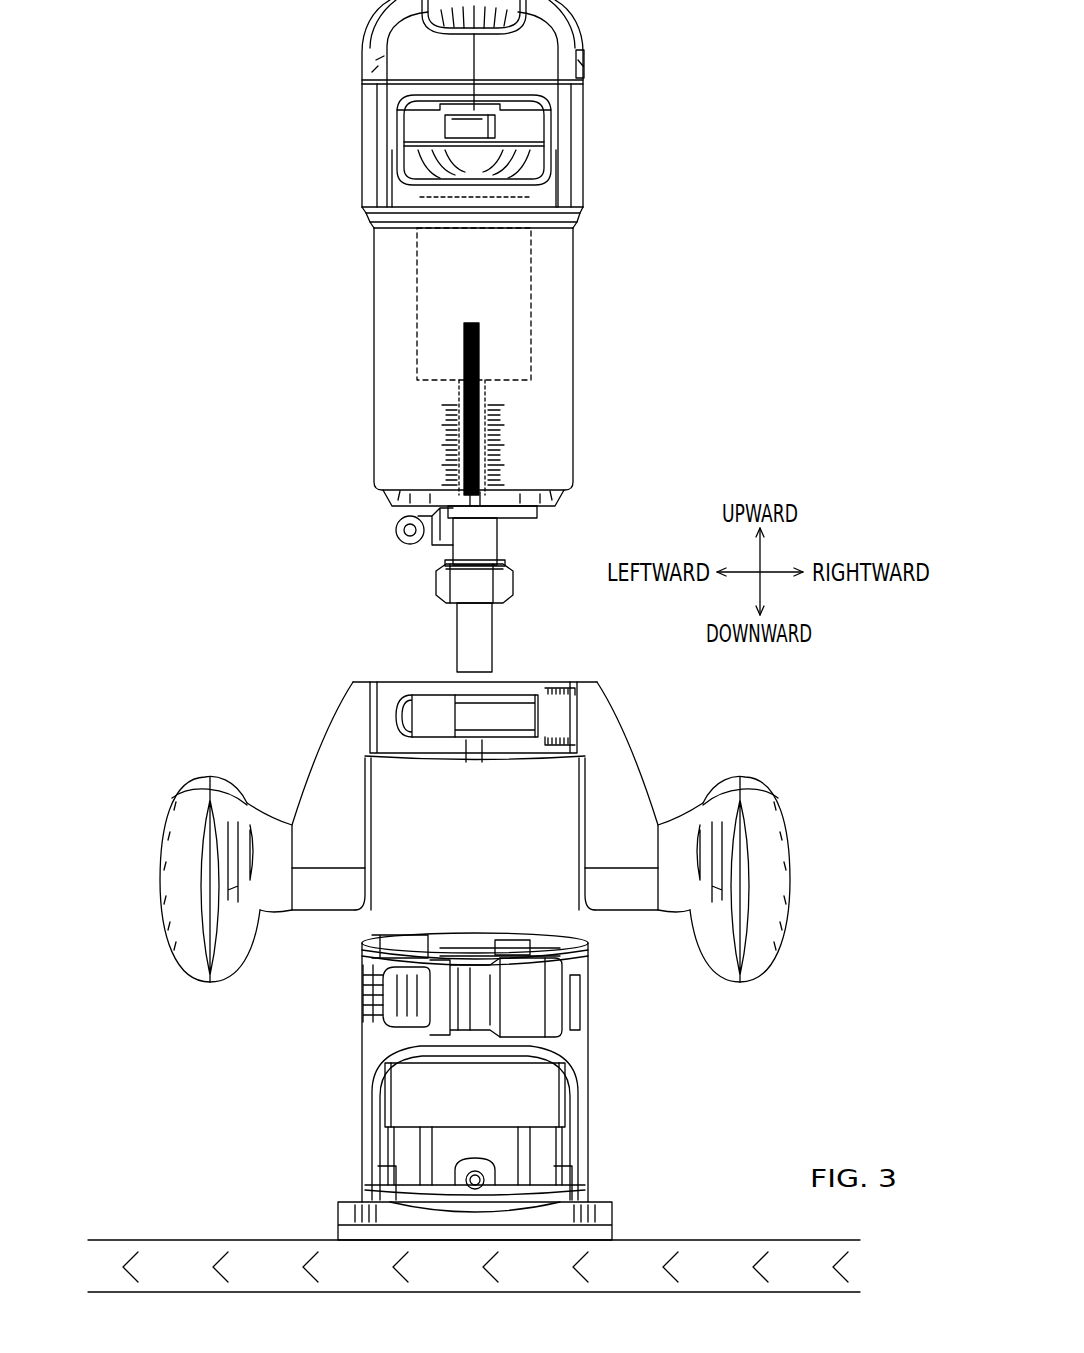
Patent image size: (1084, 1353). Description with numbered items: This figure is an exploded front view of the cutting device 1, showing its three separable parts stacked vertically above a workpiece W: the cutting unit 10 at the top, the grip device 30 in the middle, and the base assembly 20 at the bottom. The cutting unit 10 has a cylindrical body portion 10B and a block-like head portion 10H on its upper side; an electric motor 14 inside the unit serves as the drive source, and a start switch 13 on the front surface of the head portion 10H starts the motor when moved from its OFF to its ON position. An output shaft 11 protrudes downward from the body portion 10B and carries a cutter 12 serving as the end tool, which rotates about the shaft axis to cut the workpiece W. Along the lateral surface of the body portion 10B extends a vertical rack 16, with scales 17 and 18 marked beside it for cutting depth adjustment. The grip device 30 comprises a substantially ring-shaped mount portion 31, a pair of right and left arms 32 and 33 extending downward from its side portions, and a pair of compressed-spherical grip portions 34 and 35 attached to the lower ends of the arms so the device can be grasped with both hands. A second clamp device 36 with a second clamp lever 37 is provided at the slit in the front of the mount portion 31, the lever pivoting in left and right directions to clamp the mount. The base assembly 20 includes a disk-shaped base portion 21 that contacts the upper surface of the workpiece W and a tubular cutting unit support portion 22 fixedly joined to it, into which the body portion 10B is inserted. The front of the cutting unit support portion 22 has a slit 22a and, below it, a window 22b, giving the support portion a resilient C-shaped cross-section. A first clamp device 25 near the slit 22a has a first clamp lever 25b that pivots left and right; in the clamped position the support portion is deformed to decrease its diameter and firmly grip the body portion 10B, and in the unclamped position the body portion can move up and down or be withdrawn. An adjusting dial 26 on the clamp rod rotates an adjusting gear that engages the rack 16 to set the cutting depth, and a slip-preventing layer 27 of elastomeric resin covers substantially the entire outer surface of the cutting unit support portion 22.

The cutting device 1 is at (707, 328).
The cutting unit 10 is at (352, 264).
The head portion 10H is at (538, 50).
The body portion 10B is at (395, 320).
The start switch 13 is at (458, 128).
The electric motor 14 is at (512, 288).
The rack 16 is at (480, 346).
The scale 17 is at (440, 420).
The scale 18 is at (505, 440).
The output shaft 11 is at (488, 535).
The cutter 12 is at (482, 634).
The grip device 30 is at (662, 701).
The mount portion 31 is at (406, 688).
The arm 32 is at (334, 772).
The arm 33 is at (616, 772).
The grip portion 34 is at (165, 860).
The grip portion 35 is at (786, 860).
The second clamp device 36 is at (484, 780).
The second clamp lever 37 is at (468, 722).
The base assembly 20 is at (624, 1085).
The base portion 21 is at (340, 1232).
The cutting unit support portion 22 is at (362, 1078).
The slit 22a is at (465, 955).
The window 22b is at (548, 1100).
The first clamp device 25 is at (540, 1002).
The first clamp lever 25b is at (527, 985).
The adjusting dial 26 is at (363, 992).
The slip-preventing layer 27 is at (582, 1044).
The workpiece W is at (712, 1250).